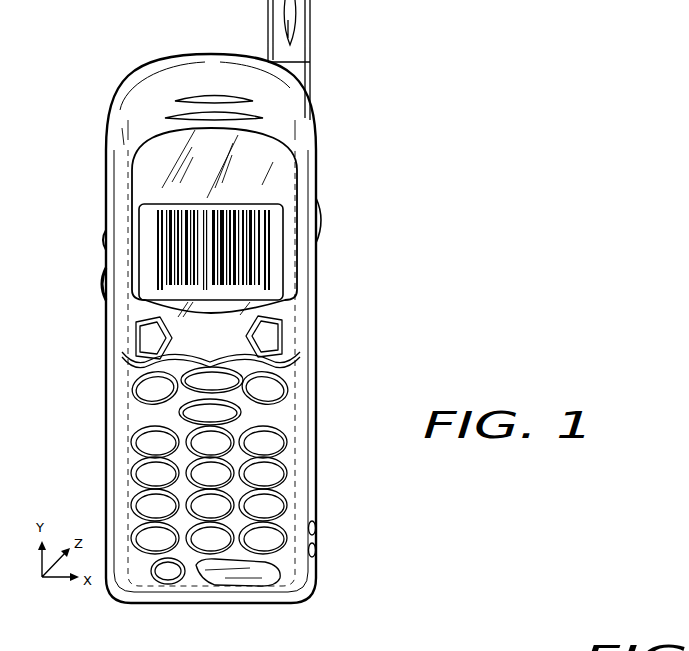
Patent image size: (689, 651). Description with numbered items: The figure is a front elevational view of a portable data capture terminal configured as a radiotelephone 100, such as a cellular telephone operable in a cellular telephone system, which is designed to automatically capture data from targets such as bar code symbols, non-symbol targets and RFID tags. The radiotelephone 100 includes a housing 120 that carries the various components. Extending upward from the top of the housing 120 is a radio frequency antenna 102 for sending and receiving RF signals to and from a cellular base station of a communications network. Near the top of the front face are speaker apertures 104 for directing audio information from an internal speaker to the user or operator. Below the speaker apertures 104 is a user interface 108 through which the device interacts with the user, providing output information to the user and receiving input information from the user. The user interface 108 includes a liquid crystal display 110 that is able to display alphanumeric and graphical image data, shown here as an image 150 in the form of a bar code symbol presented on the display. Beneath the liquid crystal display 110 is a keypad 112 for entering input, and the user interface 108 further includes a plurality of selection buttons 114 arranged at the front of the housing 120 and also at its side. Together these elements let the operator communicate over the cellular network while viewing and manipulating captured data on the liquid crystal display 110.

The radiotelephone 100 is at (117, 58).
The radio frequency antenna 102 is at (311, 22).
The speaker apertures 104 is at (215, 100).
The user interface 108 is at (218, 357).
The liquid crystal display 110 is at (282, 253).
The keypad 112 is at (323, 422).
The selection buttons 114 is at (103, 227).
The housing 120 is at (106, 375).
The image 150 is at (272, 220).